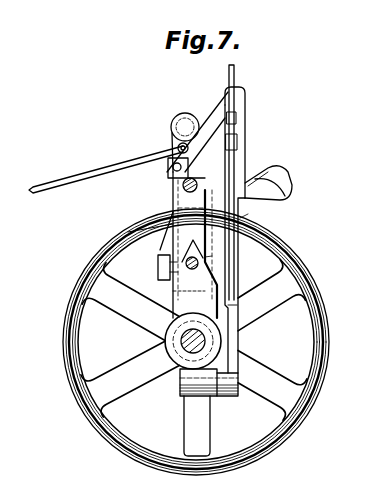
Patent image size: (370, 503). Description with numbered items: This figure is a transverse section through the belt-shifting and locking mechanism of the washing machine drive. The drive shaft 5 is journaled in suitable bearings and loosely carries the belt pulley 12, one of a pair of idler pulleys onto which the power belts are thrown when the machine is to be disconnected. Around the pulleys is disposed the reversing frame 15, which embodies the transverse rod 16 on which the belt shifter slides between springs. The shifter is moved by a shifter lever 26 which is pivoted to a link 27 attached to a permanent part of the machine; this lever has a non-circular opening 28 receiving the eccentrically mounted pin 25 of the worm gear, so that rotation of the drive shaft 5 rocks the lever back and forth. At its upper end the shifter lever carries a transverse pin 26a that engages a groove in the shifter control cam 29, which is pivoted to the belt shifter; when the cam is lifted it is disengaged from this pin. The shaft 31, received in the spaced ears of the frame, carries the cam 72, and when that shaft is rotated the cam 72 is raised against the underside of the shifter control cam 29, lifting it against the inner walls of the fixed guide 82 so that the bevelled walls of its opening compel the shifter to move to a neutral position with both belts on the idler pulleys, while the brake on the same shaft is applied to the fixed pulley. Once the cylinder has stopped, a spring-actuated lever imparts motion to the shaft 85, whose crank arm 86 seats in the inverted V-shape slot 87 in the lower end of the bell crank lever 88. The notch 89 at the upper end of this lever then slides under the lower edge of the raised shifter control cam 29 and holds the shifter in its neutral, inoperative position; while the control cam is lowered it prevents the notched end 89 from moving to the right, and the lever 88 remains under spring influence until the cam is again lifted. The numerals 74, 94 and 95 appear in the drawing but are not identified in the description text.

The drive shaft 5 is at (176, 342).
The belt pulley 12 is at (316, 402).
The reversing frame 15 is at (173, 198).
The transverse rod 16 is at (173, 124).
The eccentrically mounted pin 25 is at (242, 222).
The shifter lever 26 is at (205, 257).
The transverse pin 26a is at (239, 141).
The link 27 is at (220, 396).
The non-circular opening 28 is at (240, 290).
The shifter control cam 29 is at (235, 78).
The shaft 31 is at (182, 186).
The cam 72 is at (278, 185).
The axis line 74 is at (173, 292).
The fixed guide 82 is at (220, 96).
The shaft 85 is at (191, 270).
The crank arm 86 is at (158, 259).
The inverted V-shape slot 87 is at (140, 234).
The bell crank lever 88 is at (220, 130).
The notch 89 is at (237, 118).
The handle 94 is at (60, 186).
The lip 95 is at (268, 170).